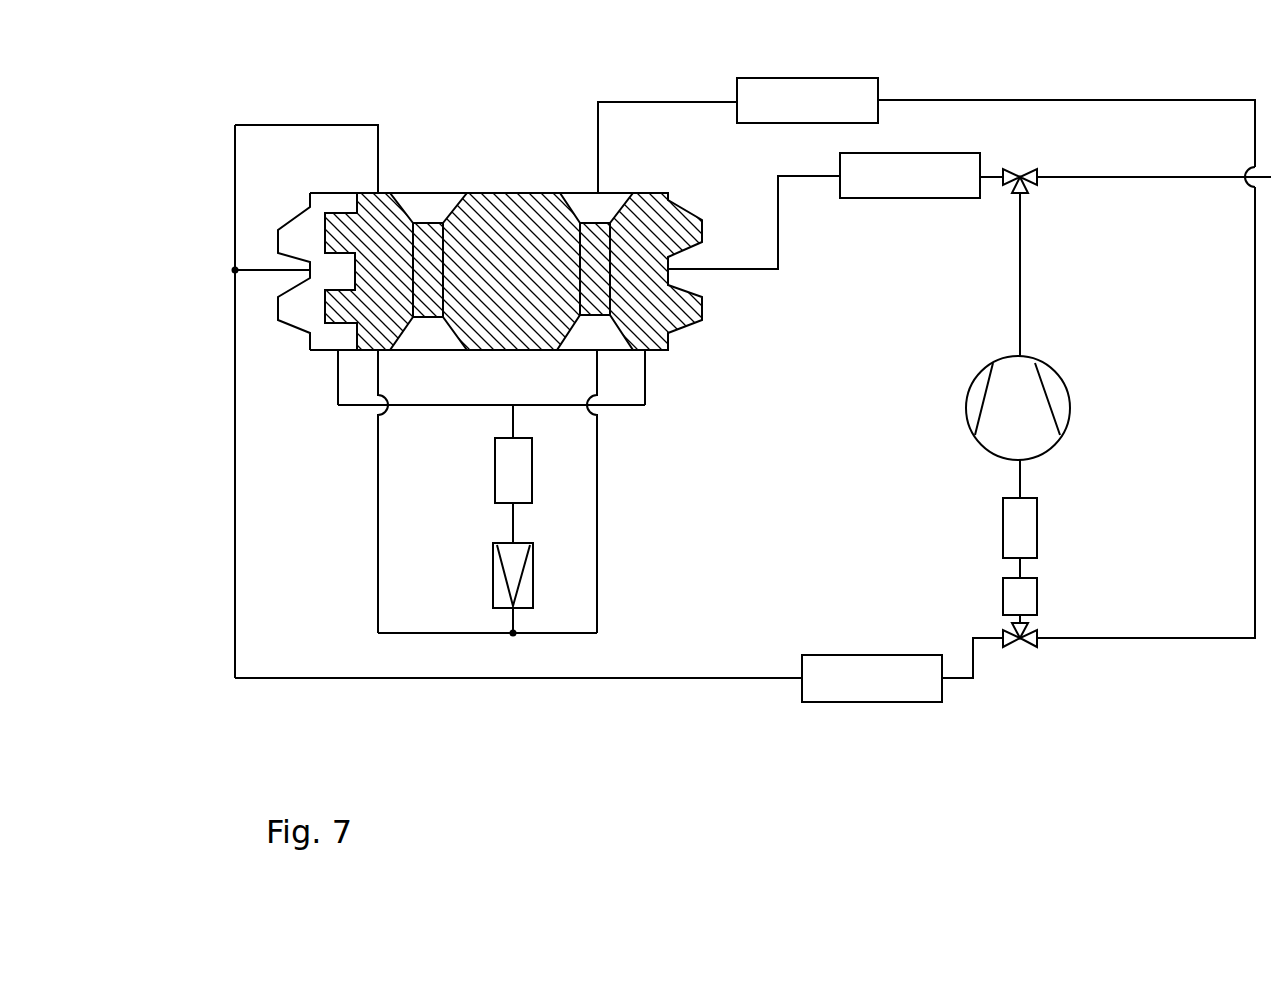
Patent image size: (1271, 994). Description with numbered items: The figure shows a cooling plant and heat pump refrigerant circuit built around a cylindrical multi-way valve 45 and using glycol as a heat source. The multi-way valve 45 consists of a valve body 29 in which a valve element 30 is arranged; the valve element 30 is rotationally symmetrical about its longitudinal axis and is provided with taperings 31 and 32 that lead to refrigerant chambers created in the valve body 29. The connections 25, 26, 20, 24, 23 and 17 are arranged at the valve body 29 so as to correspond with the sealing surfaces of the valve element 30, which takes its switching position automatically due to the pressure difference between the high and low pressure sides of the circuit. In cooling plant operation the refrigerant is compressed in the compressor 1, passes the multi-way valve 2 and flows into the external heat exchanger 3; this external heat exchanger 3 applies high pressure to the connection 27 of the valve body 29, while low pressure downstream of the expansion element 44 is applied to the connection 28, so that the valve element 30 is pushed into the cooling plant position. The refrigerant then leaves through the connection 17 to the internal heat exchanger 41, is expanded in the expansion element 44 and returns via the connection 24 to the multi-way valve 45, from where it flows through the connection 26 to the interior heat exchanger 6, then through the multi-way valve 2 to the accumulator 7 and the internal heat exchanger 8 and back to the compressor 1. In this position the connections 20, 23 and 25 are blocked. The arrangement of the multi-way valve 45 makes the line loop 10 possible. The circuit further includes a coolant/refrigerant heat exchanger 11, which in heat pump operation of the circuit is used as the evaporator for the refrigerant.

The compressor 1 is at (1057, 400).
The multi-way valve 2 is at (1002, 191).
The external heat exchanger 3 is at (872, 176).
The interior heat exchanger 6 is at (903, 698).
The accumulator 7 is at (1020, 593).
The internal heat exchanger 8 is at (1020, 527).
The line loop 10 is at (513, 520).
The coolant/refrigerant heat exchanger 11 is at (765, 100).
The connection 17 is at (645, 378).
The connection 20 is at (338, 372).
The connection 23 is at (597, 378).
The connection 24 is at (378, 372).
The connection 25 is at (598, 165).
The connection 26 is at (378, 157).
The connection 27 is at (778, 269).
The connection 28 is at (275, 270).
The valve body 29 is at (453, 193).
The valve element 30 is at (372, 305).
The tapering 31 is at (427, 257).
The tapering 32 is at (597, 270).
The internal heat exchanger 41 is at (532, 470).
The expansion element 44 is at (513, 570).
The multi-way valve 45 is at (492, 193).